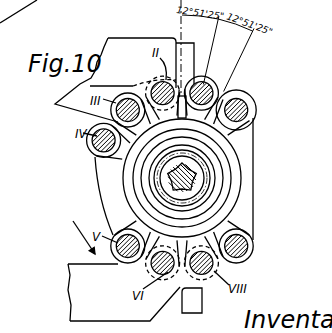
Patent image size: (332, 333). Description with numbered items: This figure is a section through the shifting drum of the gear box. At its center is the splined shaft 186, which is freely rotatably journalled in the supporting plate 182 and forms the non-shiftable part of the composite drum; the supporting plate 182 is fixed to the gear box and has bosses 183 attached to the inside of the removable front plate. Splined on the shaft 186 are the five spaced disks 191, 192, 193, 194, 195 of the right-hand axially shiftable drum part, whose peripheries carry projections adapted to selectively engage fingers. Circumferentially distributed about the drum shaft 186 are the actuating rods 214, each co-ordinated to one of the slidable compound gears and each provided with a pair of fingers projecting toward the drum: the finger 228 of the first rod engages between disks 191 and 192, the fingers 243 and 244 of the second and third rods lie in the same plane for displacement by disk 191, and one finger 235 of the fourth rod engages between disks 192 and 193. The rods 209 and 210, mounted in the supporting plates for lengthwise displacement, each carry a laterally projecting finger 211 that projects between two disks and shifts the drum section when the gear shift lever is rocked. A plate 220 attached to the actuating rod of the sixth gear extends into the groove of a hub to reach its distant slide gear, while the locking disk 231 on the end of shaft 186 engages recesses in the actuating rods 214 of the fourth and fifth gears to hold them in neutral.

The supporting plate 182 is at (246, 236).
The boss 183 is at (190, 48).
The splined shaft 186 is at (140, 192).
The disk 191 is at (238, 158).
The disk 192 is at (237, 178).
The disk 193 is at (235, 188).
The disk 194 is at (233, 207).
The disk 195 is at (237, 219).
The rod 209 is at (254, 106).
The rod 210 is at (239, 258).
The finger 211 is at (250, 129).
The actuating rod 214 is at (198, 82).
The plate 220 is at (72, 270).
The finger 228 is at (231, 92).
The locking disk 231 is at (150, 184).
The finger 235 is at (95, 158).
The finger 243 is at (161, 82).
The finger 244 is at (95, 124).